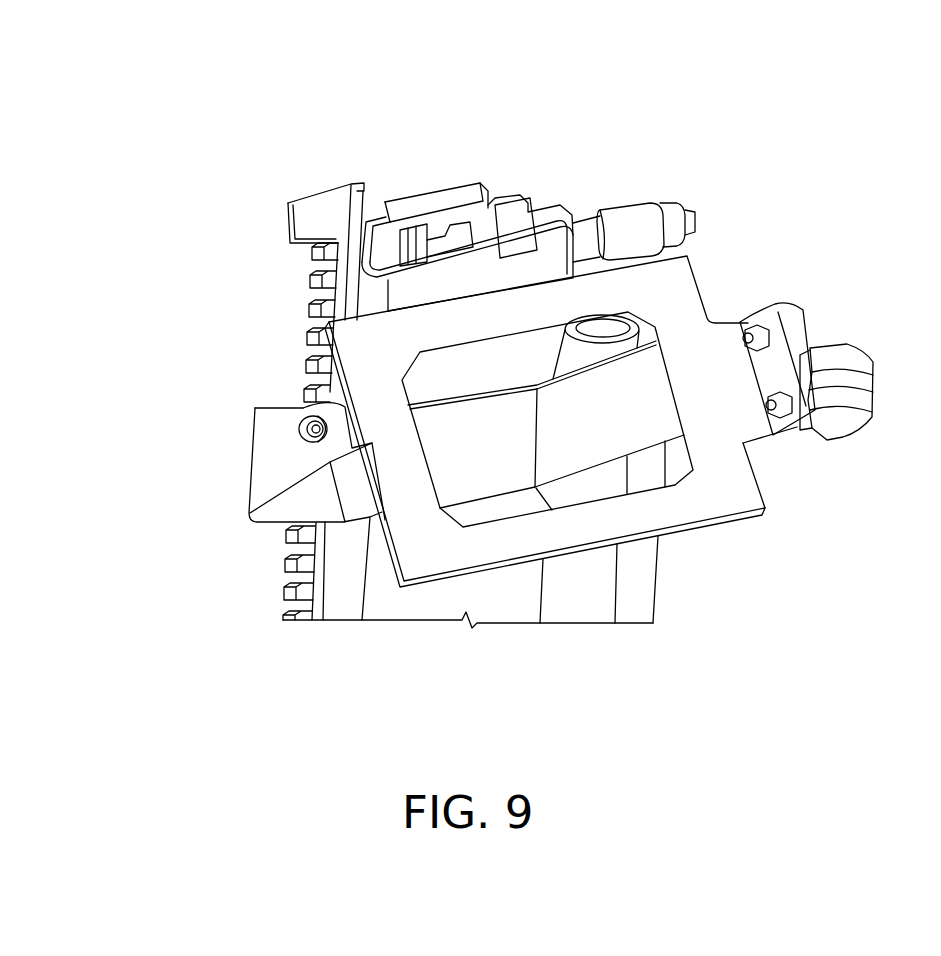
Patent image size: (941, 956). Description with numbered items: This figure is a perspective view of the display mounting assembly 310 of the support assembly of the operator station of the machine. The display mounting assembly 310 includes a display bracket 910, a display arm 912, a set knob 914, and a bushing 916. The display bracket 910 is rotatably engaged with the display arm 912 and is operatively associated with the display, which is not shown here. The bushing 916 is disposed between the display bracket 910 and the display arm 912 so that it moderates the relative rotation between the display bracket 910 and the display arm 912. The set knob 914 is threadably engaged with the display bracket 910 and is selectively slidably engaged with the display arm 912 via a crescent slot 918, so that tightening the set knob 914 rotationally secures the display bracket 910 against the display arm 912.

The display mounting assembly 310 is at (745, 144).
The display bracket 910 is at (697, 283).
The display arm 912 is at (303, 410).
The set knob 914 is at (848, 350).
The bushing 916 is at (316, 412).
The crescent slot 918 is at (796, 433).